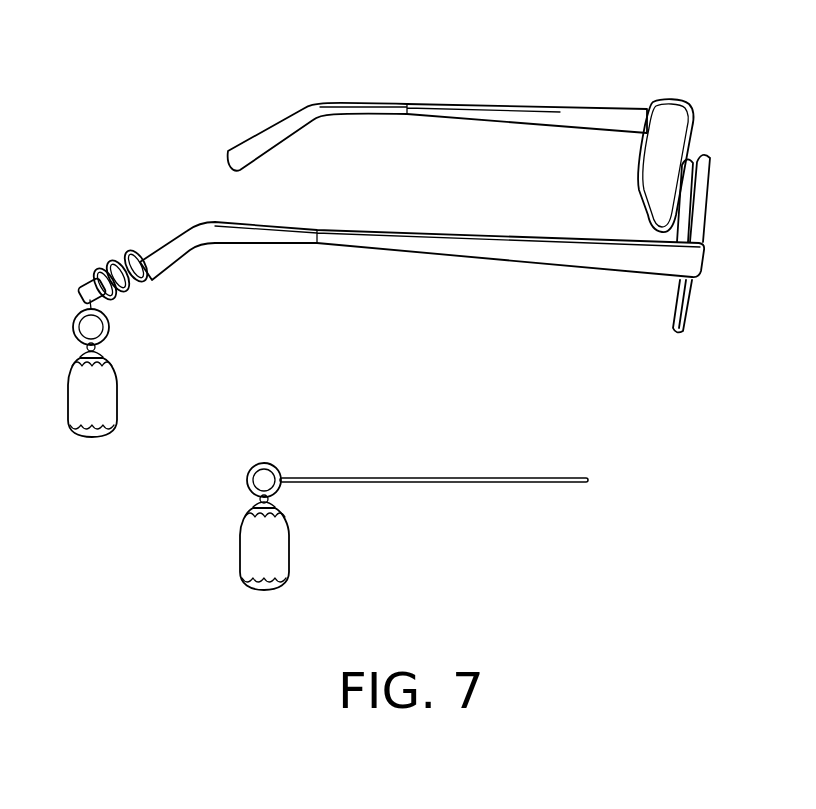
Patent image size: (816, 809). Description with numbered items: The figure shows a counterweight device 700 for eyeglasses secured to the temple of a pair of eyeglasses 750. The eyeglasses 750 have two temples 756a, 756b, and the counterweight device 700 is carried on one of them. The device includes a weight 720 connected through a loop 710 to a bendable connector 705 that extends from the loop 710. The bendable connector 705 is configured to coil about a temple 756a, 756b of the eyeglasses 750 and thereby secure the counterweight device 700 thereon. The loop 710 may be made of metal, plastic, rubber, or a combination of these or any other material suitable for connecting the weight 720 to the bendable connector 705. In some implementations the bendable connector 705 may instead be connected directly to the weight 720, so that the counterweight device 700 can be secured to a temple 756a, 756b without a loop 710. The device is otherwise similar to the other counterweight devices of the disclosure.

The pair of eyeglasses 750 is at (602, 112).
The temple 756a is at (478, 110).
The temple 756b is at (478, 248).
The bendable connector 705 is at (97, 268).
The loop 710 is at (110, 327).
The weight 720 is at (105, 408).
The counterweight device 700 is at (105, 370).